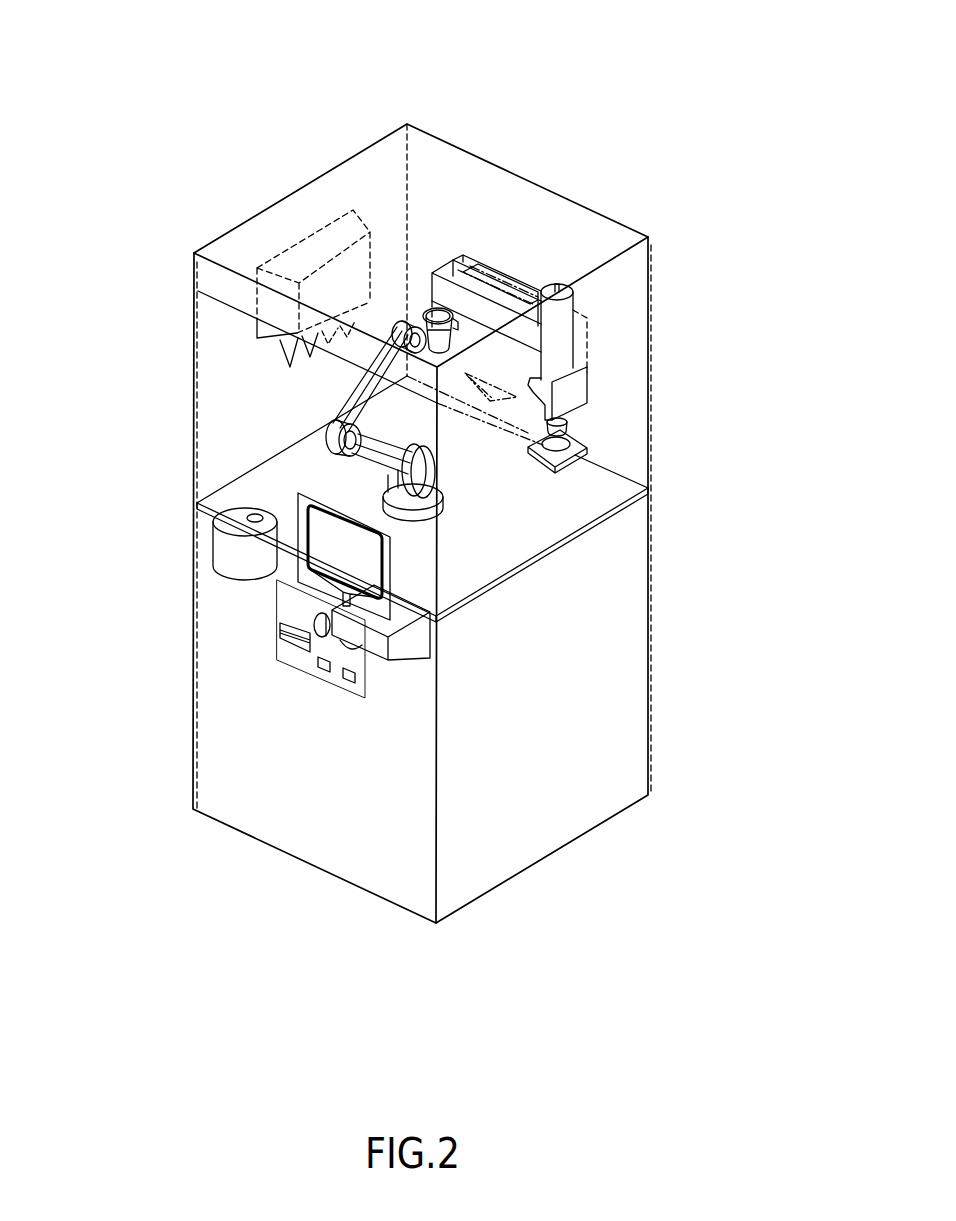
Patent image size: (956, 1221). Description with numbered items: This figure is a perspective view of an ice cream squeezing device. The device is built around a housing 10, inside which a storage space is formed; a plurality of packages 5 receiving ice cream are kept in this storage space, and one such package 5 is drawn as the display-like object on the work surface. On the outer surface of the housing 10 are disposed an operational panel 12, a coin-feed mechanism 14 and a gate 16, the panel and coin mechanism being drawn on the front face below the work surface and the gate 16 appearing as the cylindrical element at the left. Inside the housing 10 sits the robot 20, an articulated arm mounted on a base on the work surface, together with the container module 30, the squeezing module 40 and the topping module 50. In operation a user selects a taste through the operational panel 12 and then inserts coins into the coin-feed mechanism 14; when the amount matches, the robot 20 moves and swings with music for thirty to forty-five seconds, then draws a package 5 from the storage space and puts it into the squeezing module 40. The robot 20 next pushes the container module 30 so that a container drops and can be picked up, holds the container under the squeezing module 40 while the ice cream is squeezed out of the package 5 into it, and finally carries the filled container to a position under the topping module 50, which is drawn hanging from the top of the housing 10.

The housing 10 is at (642, 528).
The package 5 is at (353, 543).
The operational panel 12 is at (413, 647).
The coin-feed mechanism 14 is at (297, 607).
The gate 16 is at (232, 528).
The robot 20 is at (333, 432).
The container module 30 is at (557, 352).
The squeezing module 40 is at (492, 293).
The topping module 50 is at (320, 248).